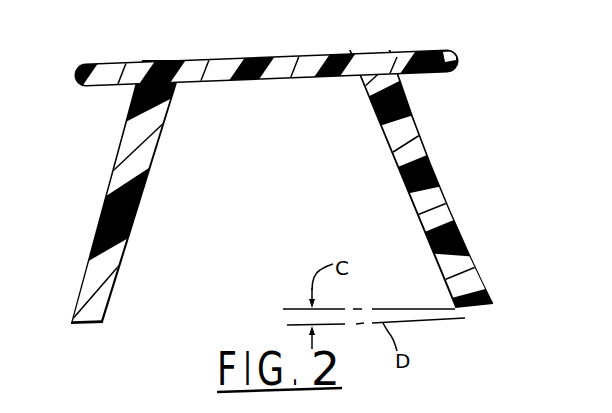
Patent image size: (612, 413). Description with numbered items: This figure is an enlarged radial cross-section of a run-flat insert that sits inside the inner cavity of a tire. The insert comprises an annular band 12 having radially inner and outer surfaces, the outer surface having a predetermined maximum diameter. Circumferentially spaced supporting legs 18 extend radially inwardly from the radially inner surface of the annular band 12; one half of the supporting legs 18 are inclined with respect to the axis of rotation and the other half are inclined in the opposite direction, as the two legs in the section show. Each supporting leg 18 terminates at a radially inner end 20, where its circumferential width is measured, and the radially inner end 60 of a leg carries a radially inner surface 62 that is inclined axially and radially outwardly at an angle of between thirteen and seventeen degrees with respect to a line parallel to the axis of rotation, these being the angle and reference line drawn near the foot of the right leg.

The annular band 12 is at (300, 60).
The supporting leg 18 is at (438, 177).
The radially inner surface 62 is at (122, 258).
The radially inner end 60 is at (83, 325).
The radially inner end 20 is at (473, 306).